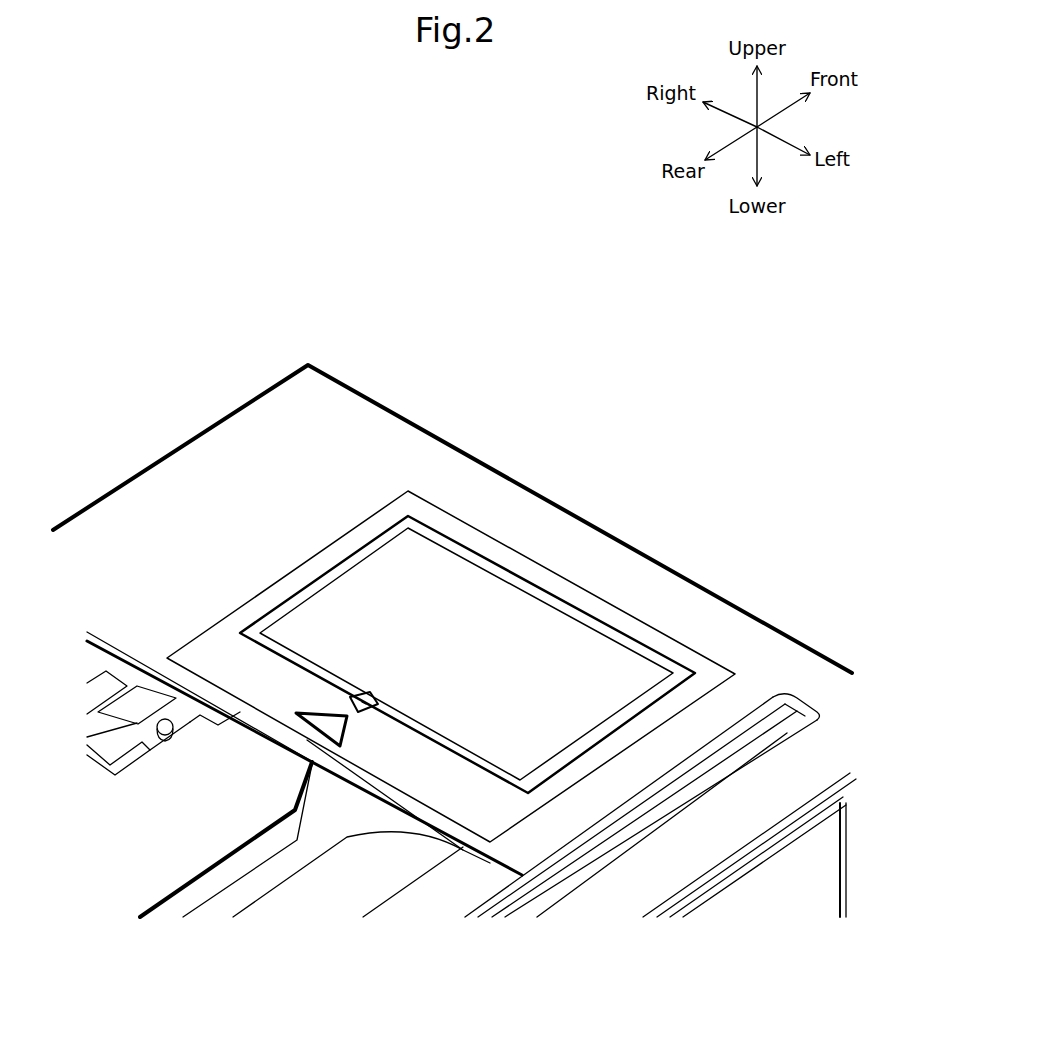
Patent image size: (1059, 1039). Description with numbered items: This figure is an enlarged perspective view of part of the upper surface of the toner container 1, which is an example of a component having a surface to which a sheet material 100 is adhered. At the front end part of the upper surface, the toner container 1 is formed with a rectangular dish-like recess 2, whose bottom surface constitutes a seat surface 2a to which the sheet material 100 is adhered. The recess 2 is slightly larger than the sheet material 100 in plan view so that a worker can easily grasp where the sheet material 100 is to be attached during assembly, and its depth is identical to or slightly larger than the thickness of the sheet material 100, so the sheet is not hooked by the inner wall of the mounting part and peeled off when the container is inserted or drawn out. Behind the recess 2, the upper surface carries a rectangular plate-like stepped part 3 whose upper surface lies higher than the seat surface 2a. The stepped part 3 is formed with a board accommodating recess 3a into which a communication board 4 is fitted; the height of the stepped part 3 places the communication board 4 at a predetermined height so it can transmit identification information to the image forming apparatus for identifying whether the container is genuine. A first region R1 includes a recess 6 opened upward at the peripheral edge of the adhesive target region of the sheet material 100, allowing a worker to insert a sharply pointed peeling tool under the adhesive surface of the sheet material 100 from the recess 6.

The toner container 1 is at (217, 385).
The recess 2 is at (452, 525).
The seat surface 2a is at (382, 532).
The sheet material 100 is at (518, 630).
The recess 6 is at (366, 690).
The first region R1 is at (378, 690).
The communication board 4 is at (100, 668).
The board accommodating recess 3a is at (160, 745).
The stepped part 3 is at (253, 848).